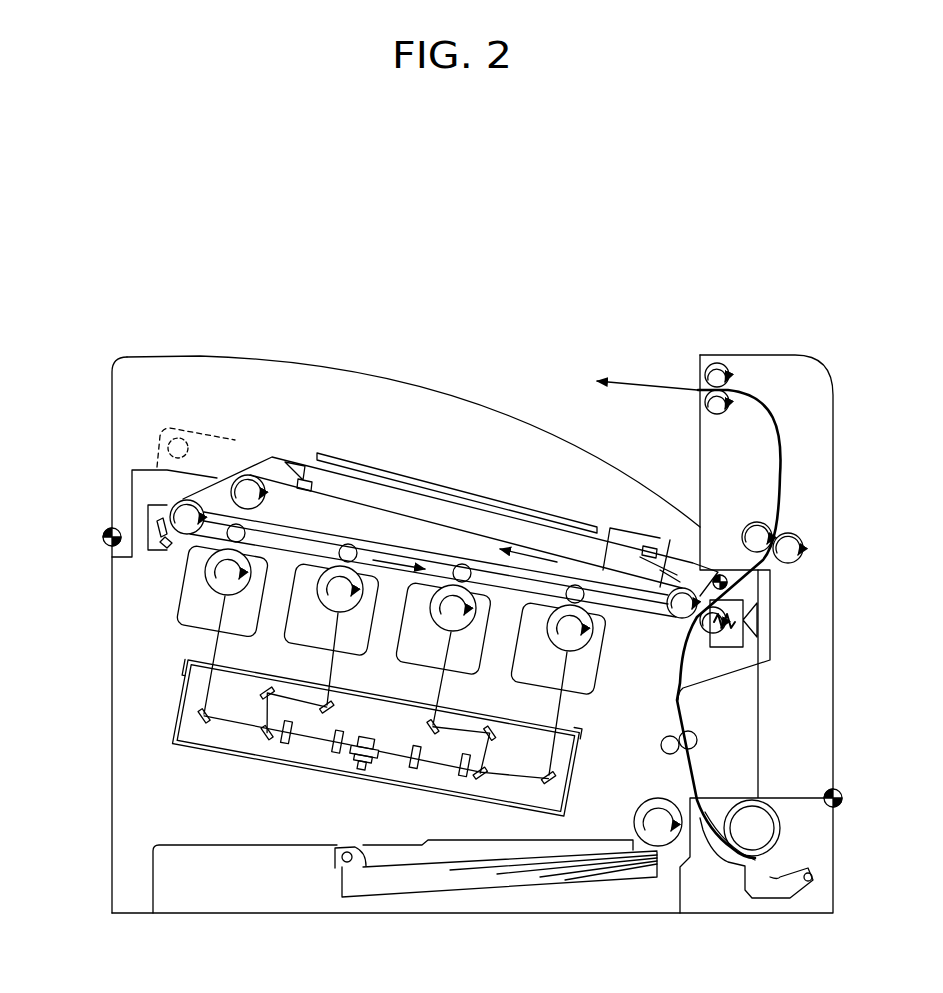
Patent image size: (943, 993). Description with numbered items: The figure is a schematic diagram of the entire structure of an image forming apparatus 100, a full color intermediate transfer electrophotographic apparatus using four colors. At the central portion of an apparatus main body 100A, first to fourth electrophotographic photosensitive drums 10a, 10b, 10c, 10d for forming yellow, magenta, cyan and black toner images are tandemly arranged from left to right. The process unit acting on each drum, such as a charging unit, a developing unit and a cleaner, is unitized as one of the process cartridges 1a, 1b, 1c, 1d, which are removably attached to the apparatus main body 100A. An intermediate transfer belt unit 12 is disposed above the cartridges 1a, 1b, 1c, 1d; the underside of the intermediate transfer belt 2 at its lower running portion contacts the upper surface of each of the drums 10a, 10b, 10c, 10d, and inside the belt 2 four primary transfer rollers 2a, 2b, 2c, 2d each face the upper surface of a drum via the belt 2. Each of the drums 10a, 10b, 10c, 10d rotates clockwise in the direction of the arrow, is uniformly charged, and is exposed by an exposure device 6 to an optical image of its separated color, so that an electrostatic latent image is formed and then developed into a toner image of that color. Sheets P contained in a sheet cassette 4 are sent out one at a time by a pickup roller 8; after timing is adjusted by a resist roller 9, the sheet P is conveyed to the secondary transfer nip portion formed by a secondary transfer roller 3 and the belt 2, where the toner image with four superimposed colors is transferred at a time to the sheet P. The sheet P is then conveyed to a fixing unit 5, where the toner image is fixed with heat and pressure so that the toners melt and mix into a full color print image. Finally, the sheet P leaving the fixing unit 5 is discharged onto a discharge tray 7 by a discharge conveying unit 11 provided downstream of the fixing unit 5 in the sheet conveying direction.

The image forming apparatus 100 is at (416, 288).
The apparatus main body 100A is at (112, 636).
The discharge tray 7 is at (473, 392).
The discharge conveying unit 11 is at (718, 362).
The intermediate transfer belt 2 is at (358, 496).
The intermediate transfer belt unit 12 is at (509, 530).
The primary transfer roller 2a is at (248, 528).
The primary transfer roller 2b is at (360, 550).
The primary transfer roller 2c is at (462, 563).
The primary transfer roller 2d is at (576, 584).
The fixing unit 5 is at (792, 531).
The secondary transfer roller 3 is at (702, 637).
The resist roller 9 is at (696, 733).
The pickup roller 8 is at (638, 804).
The process cartridge 1a is at (180, 627).
The process cartridge 1b is at (308, 647).
The process cartridge 1c is at (422, 666).
The process cartridge 1d is at (535, 685).
The electrophotographic photosensitive drum 10a is at (212, 594).
The electrophotographic photosensitive drum 10b is at (324, 611).
The electrophotographic photosensitive drum 10c is at (440, 630).
The electrophotographic photosensitive drum 10d is at (555, 650).
The exposure device 6 is at (340, 777).
The sheet P is at (500, 860).
The sheet cassette 4 is at (488, 898).